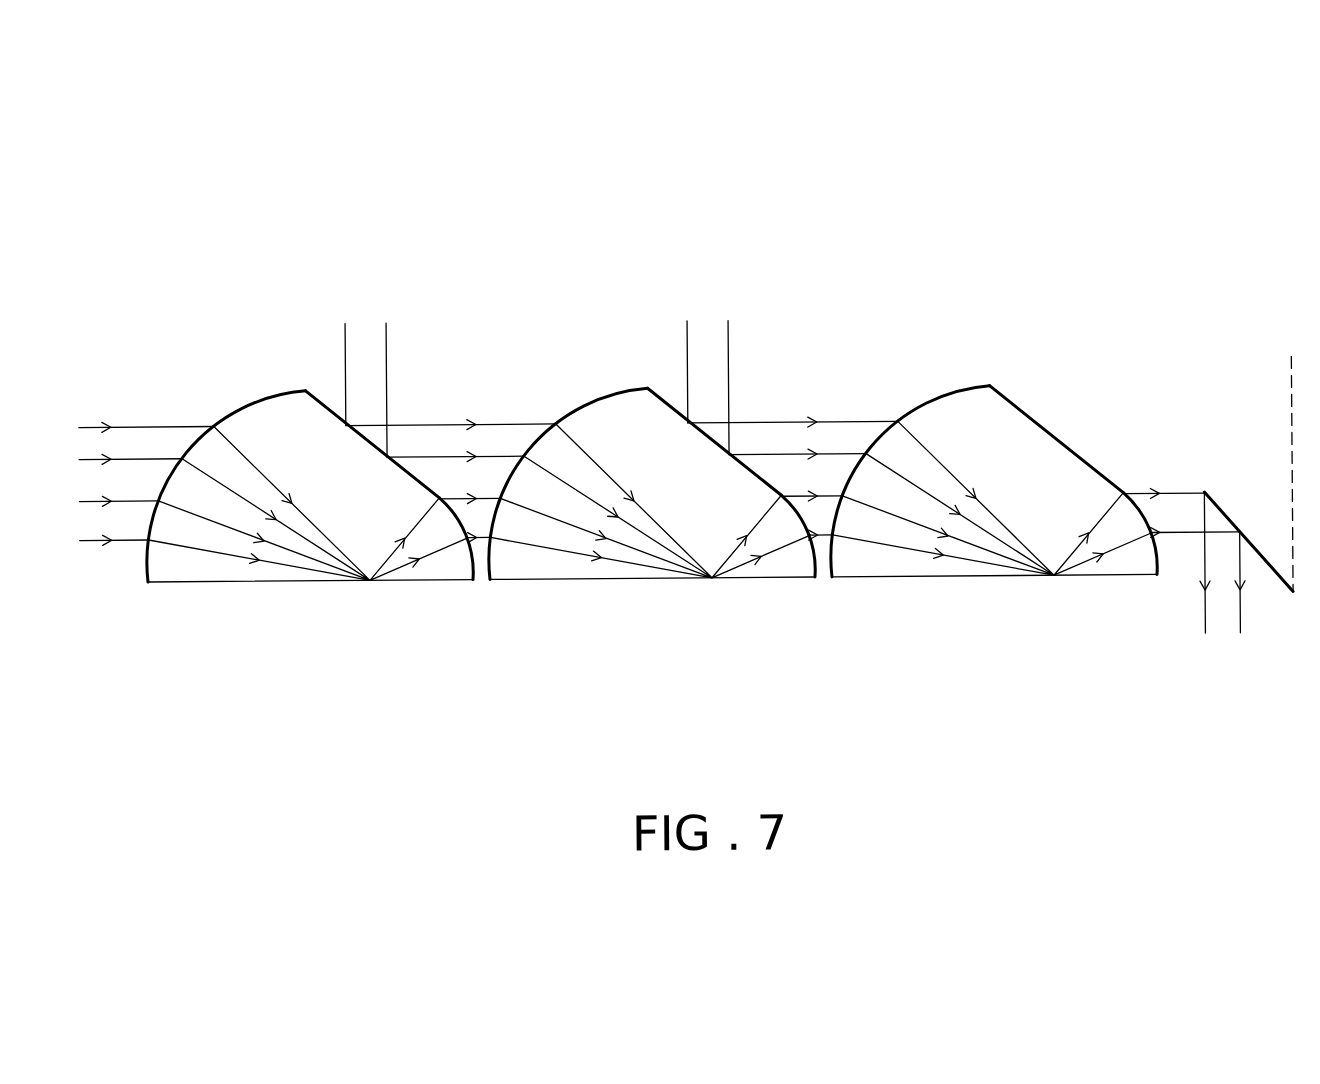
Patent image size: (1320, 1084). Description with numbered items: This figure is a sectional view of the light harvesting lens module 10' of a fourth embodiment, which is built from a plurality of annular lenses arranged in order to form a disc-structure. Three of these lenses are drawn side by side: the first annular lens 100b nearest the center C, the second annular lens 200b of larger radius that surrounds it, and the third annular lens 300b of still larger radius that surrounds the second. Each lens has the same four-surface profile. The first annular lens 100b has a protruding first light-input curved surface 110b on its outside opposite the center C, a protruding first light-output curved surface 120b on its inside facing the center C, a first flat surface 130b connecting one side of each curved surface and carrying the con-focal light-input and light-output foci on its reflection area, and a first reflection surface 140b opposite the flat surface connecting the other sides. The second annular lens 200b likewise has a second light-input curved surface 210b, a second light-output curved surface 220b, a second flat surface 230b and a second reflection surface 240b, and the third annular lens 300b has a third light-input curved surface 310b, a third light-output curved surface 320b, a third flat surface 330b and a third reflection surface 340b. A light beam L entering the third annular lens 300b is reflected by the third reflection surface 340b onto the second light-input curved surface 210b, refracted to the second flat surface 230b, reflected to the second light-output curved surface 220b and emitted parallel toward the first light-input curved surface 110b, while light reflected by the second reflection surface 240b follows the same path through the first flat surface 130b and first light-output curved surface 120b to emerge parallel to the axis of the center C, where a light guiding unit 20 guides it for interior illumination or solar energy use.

The light harvesting lens module 10' is at (1227, 200).
The light guiding unit 20 is at (1235, 527).
The light beam L is at (94, 424).
The center C is at (1291, 459).
The first annular lens 100b is at (1012, 476).
The first light-input curved surface 110b is at (910, 457).
The first light-output curved surface 120b is at (1158, 564).
The first flat surface 130b is at (1060, 564).
The first reflection surface 140b is at (1049, 405).
The second annular lens 200b is at (670, 479).
The second light-input curved surface 210b is at (568, 459).
The second light-output curved surface 220b is at (816, 567).
The second flat surface 230b is at (718, 567).
The second reflection surface 240b is at (707, 407).
The third annular lens 300b is at (328, 481).
The third light-input curved surface 310b is at (267, 395).
The third light-output curved surface 320b is at (475, 567).
The third flat surface 330b is at (370, 583).
The third reflection surface 340b is at (325, 402).